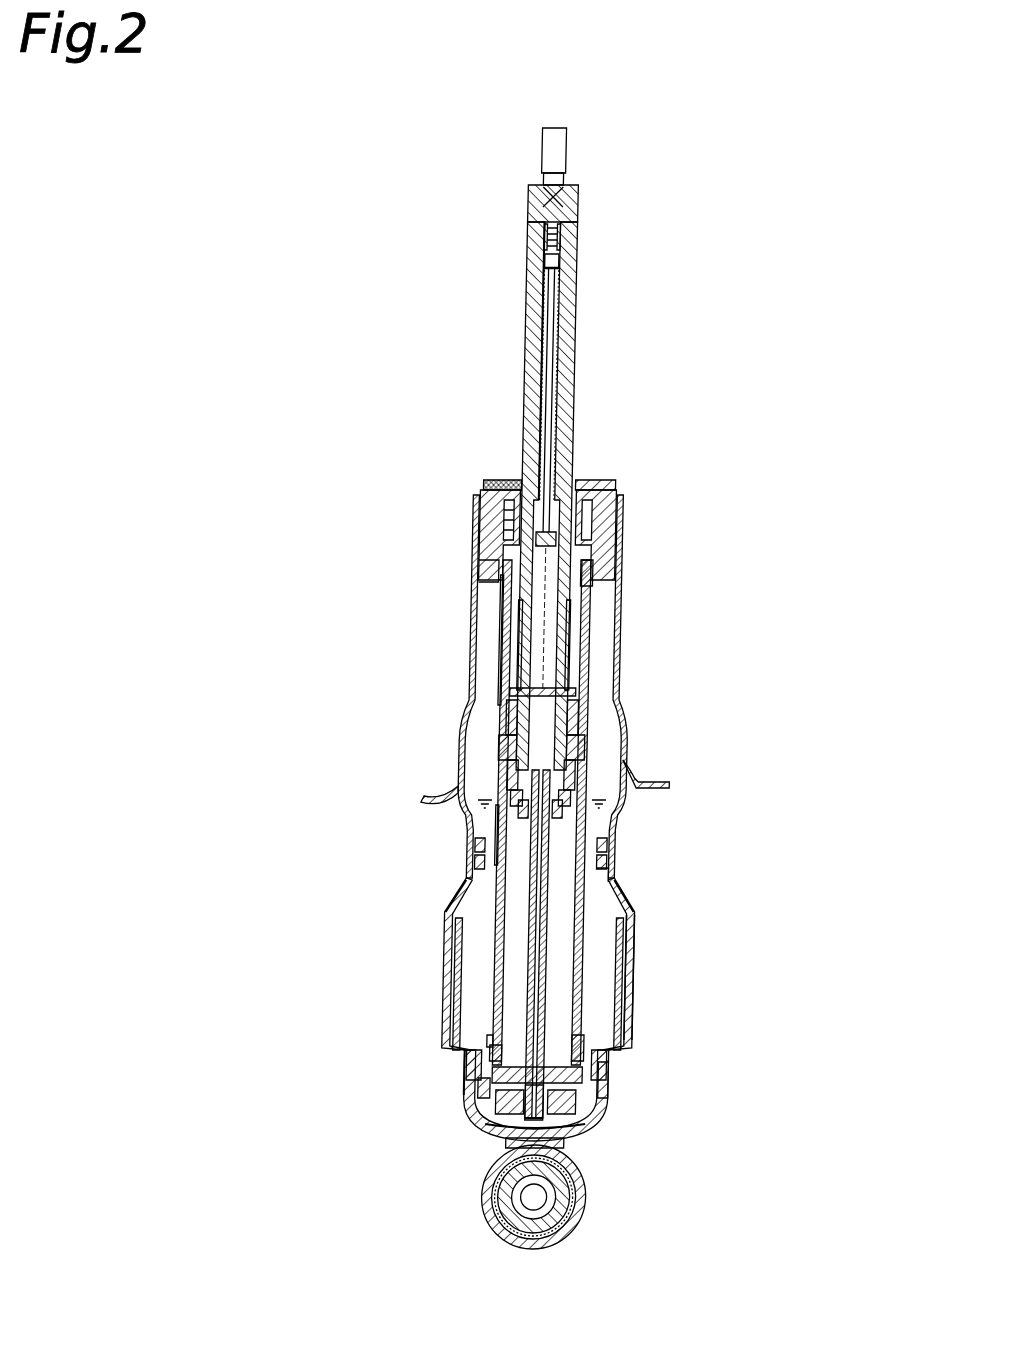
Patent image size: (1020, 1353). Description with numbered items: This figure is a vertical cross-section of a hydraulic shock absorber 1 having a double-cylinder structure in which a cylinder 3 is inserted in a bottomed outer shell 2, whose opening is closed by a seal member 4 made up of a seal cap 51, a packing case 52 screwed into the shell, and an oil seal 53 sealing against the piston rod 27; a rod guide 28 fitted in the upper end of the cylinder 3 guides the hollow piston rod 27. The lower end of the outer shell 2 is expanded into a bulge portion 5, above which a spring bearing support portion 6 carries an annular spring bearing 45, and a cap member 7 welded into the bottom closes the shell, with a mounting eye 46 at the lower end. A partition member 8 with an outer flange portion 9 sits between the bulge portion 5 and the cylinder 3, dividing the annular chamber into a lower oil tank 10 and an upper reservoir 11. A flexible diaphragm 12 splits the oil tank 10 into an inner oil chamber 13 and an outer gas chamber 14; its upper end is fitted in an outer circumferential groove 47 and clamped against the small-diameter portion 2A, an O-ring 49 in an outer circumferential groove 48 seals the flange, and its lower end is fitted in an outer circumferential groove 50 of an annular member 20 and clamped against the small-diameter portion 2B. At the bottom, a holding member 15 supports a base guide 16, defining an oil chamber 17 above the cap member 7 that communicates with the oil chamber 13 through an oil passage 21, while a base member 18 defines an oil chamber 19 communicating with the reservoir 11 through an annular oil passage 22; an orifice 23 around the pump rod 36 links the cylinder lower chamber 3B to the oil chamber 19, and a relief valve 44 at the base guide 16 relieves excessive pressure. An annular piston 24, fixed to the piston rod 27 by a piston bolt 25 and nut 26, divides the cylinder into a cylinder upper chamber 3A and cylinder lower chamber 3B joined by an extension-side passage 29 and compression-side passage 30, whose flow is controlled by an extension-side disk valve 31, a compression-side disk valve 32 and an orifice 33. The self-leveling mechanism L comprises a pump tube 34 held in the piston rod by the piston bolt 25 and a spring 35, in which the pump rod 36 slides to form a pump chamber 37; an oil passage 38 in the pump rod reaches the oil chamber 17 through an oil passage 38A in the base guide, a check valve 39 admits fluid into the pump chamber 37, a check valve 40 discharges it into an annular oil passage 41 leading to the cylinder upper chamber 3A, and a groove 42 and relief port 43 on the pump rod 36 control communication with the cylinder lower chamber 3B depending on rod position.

The hydraulic shock absorber 1 is at (725, 196).
The outer shell 2 is at (612, 620).
The small-diameter portion 2A is at (462, 896).
The small-diameter portion 2B is at (466, 1076).
The cylinder 3 is at (582, 646).
The cylinder upper chamber 3A is at (503, 620).
The cylinder lower chamber 3B is at (492, 822).
The seal member 4 is at (478, 490).
The bulge portion 5 is at (447, 972).
The spring bearing support portion 6 is at (428, 802).
The cap member 7 is at (492, 1141).
The partition member 8 is at (497, 951).
The outer flange portion 9 is at (470, 862).
The oil tank 10 is at (645, 953).
The reservoir 11 is at (600, 676).
The flexible diaphragm 12 is at (622, 906).
The oil chamber 13 is at (603, 896).
The gas chamber 14 is at (622, 936).
The holding member 15 is at (486, 1126).
The base guide 16 is at (491, 1106).
The oil chamber 17 is at (512, 1146).
The base member 18 is at (476, 1087).
The oil chamber 19 is at (612, 1111).
The annular member 20 is at (472, 1041).
The oil passage 21 is at (603, 1069).
The annular oil passage 22 is at (600, 1026).
The orifice 23 is at (456, 1010).
The piston 24 is at (590, 731).
The piston bolt 25 is at (585, 706).
The nut 26 is at (603, 815).
The piston rod 27 is at (583, 212).
The rod guide 28 is at (492, 580).
The extension-side passage 29 is at (600, 756).
The compression-side passage 30 is at (492, 746).
The extension-side disk valve 31 is at (593, 800).
The compression-side disk valve 32 is at (520, 716).
The orifice 33 is at (520, 776).
The pump tube 34 is at (578, 302).
The spring 35 is at (575, 248).
The pump rod 36 is at (548, 1010).
The pump chamber 37 is at (556, 358).
The oil passage 38 is at (541, 1001).
The oil passage 38A is at (572, 1151).
The check valve 39 is at (560, 538).
The check valve 40 is at (548, 267).
The annular oil passage 41 is at (540, 343).
The groove 42 is at (578, 583).
The relief port 43 is at (520, 666).
The relief valve 44 is at (572, 1136).
The spring bearing 45 is at (660, 791).
The mounting eye 46 is at (566, 1220).
The outer circumferential groove 47 is at (470, 882).
The outer circumferential groove 48 is at (628, 836).
The O-ring 49 is at (612, 856).
The outer circumferential groove 50 is at (467, 1063).
The seal cap 51 is at (485, 546).
The packing case 52 is at (485, 510).
The oil seal 53 is at (600, 488).
The self-leveling mechanism L is at (548, 532).